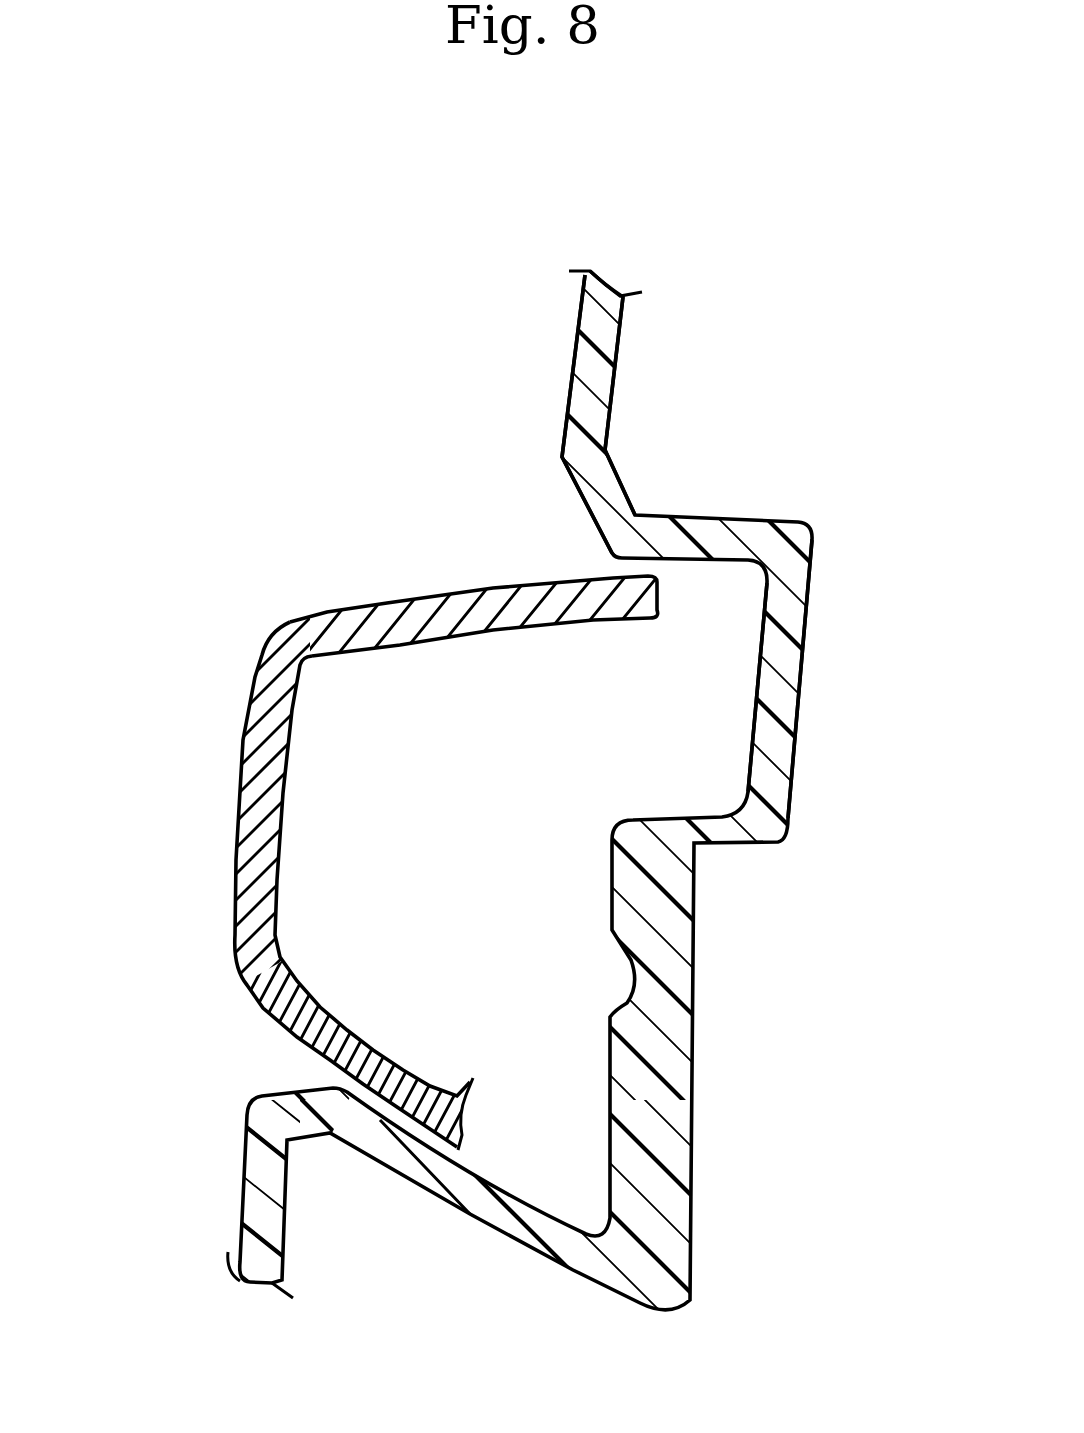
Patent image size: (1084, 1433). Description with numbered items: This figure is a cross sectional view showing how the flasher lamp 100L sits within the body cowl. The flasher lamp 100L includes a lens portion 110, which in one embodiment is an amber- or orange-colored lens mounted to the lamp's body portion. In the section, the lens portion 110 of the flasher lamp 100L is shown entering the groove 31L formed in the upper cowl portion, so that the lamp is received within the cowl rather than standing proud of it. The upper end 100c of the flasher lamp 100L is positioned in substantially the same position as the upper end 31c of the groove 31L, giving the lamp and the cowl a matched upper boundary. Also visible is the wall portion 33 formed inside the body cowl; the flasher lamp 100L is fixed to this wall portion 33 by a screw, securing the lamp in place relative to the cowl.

The flasher lamp 100L is at (353, 807).
The upper end of flasher lamp 100c is at (527, 598).
The lens portion 110 is at (250, 781).
The groove 31L is at (542, 716).
The upper end of groove 31c is at (603, 490).
The wall portion 33 is at (790, 667).